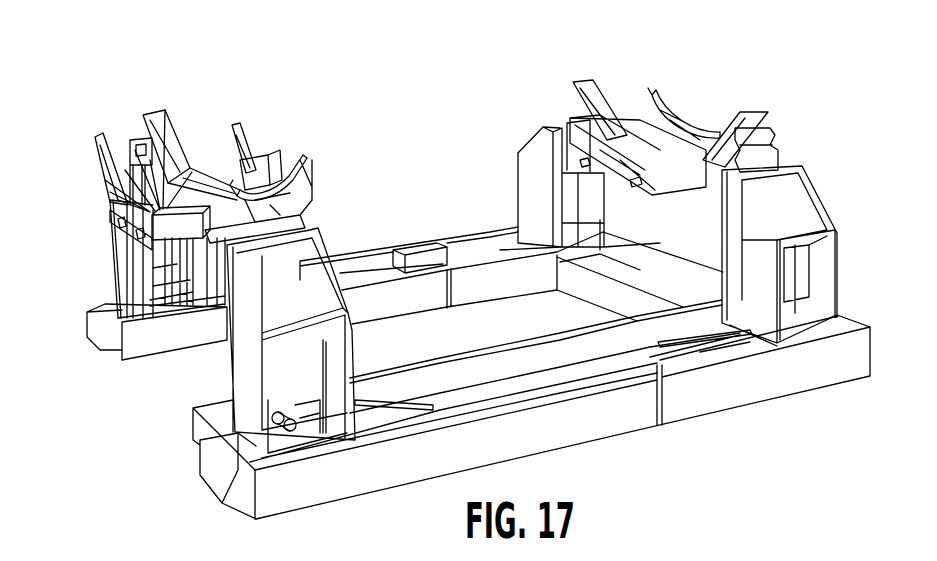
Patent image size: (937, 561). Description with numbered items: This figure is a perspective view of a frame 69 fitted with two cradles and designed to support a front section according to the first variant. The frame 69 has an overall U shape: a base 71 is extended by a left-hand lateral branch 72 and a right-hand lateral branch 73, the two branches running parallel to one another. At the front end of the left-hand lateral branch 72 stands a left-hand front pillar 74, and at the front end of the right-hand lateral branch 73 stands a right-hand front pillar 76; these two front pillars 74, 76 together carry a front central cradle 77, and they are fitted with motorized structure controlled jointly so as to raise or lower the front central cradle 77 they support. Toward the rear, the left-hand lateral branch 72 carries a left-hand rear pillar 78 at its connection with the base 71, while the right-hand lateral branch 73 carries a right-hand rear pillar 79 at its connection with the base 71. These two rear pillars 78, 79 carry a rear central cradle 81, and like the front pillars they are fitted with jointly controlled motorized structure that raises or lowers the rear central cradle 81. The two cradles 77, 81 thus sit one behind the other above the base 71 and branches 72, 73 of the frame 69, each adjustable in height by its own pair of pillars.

The frame 69 is at (767, 452).
The base 71 is at (590, 291).
The left-hand lateral branch 72 is at (583, 423).
The right-hand lateral branch 73 is at (428, 250).
The left-hand front pillar 74 is at (240, 393).
The right-hand front pillar 76 is at (120, 262).
The front central cradle 77 is at (209, 133).
The left-hand rear pillar 78 is at (824, 265).
The right-hand rear pillar 79 is at (519, 124).
The rear central cradle 81 is at (698, 96).